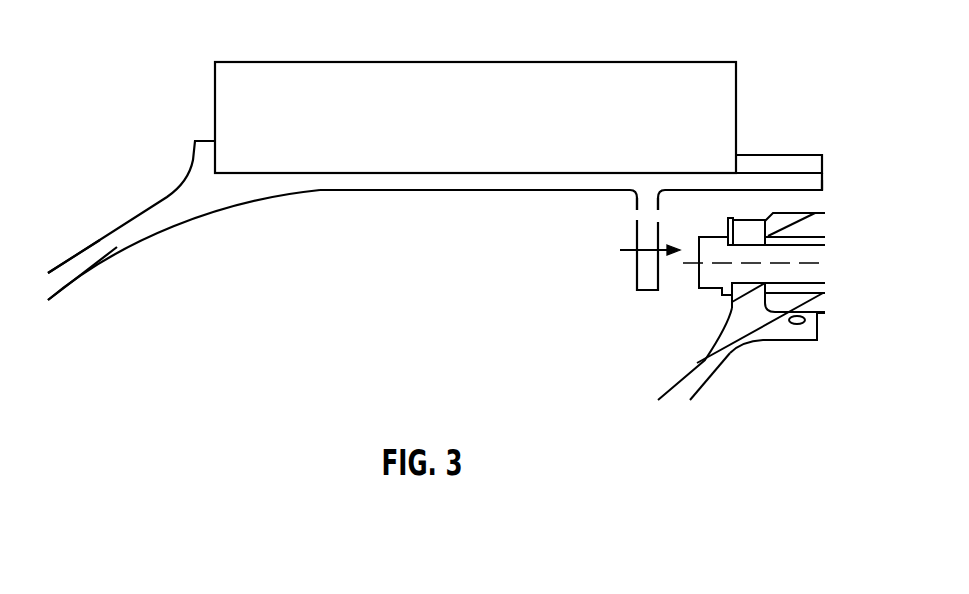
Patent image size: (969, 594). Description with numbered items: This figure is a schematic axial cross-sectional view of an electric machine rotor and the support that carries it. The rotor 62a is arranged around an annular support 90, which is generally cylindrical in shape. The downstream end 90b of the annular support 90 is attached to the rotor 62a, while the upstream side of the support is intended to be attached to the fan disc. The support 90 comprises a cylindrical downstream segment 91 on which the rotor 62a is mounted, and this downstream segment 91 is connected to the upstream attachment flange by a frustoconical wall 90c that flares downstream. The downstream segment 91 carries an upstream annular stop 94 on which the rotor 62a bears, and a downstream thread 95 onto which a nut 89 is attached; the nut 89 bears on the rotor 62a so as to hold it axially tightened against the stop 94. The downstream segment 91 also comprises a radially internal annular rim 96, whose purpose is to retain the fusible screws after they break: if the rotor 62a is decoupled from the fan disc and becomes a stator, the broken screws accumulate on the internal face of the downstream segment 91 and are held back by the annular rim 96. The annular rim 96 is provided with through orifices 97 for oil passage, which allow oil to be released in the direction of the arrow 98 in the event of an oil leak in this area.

The rotor 62a is at (570, 78).
The nut 89 is at (778, 153).
The annular support 90 is at (277, 195).
The downstream end 90b is at (822, 190).
The frustoconical wall 90c is at (118, 248).
The cylindrical downstream segment 91 is at (427, 182).
The upstream annular stop 94 is at (193, 140).
The downstream thread 95 is at (822, 190).
The radially internal annular rim 96 is at (637, 292).
The through orifices 97 is at (634, 212).
The arrow 98 is at (643, 252).